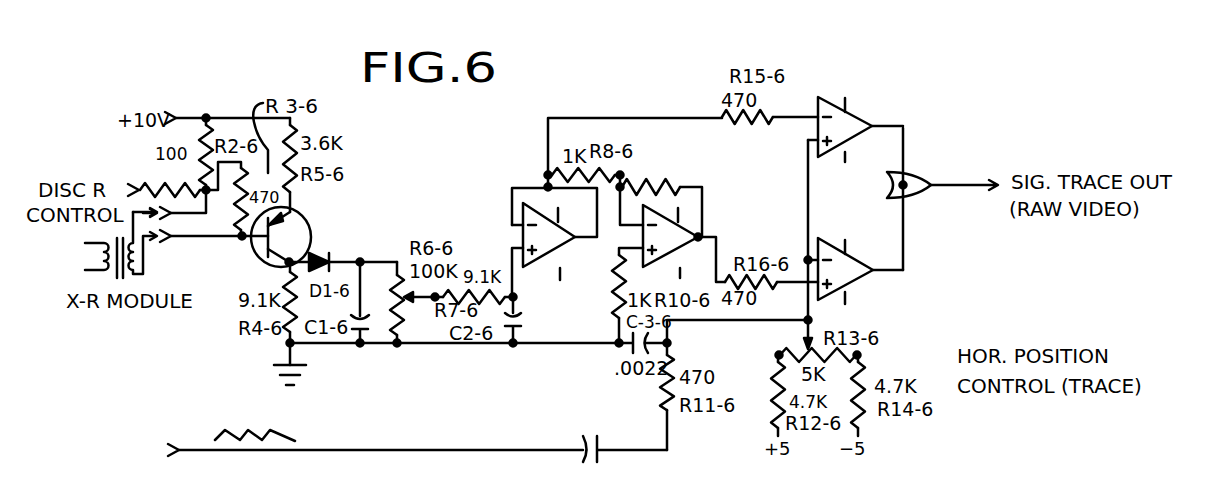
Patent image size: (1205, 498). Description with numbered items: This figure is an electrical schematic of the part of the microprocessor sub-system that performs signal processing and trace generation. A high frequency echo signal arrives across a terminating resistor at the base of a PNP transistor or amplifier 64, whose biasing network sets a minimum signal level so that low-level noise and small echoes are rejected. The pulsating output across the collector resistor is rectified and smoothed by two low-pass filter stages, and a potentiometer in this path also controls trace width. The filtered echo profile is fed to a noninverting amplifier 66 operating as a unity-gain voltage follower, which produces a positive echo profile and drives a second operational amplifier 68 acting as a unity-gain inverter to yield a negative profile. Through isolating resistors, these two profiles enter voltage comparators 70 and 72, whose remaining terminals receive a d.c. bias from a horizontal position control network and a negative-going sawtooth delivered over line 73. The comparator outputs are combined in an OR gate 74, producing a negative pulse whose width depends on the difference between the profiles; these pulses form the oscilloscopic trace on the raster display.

The PNP transistor or amplifier 64 is at (313, 225).
The noninverting amplifier 66 is at (577, 241).
The second operational amplifier 68 is at (673, 221).
The voltage comparator 70 is at (866, 118).
The voltage comparator 72 is at (862, 277).
The line 73 is at (462, 416).
The OR gate 74 is at (923, 177).